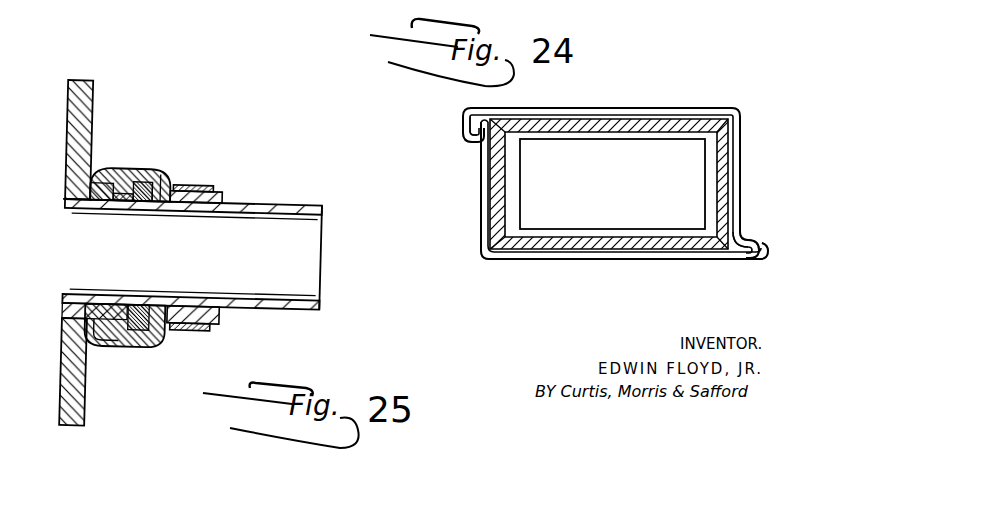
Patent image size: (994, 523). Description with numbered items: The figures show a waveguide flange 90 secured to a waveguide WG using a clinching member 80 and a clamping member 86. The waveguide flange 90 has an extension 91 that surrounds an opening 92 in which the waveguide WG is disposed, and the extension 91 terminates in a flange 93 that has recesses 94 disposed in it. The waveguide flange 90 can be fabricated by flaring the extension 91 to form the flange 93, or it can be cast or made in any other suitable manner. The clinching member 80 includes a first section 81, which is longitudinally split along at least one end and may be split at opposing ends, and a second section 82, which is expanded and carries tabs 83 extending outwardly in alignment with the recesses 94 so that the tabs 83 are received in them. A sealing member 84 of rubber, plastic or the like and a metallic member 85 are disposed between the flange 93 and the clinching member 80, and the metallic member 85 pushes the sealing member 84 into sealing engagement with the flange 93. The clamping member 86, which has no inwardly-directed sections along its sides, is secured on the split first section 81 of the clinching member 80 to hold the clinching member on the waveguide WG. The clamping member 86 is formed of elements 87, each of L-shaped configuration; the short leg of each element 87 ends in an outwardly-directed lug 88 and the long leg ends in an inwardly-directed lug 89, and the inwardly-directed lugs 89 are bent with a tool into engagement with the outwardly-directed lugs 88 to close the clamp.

In FIG. 25, the clinching member 80 is at (166, 335).
In FIG. 24, the first section 81 is at (680, 124).
In FIG. 25, the first section 81 is at (213, 314).
In FIG. 25, the second section 82 is at (119, 170).
In FIG. 25, the tabs 83 is at (95, 342).
In FIG. 25, the sealing member 84 is at (138, 188).
In FIG. 25, the metallic member 85 is at (168, 184).
In FIG. 24, the clamping member 86 is at (628, 108).
In FIG. 25, the clamping member 86 is at (208, 182).
In FIG. 24, the elements 87 is at (582, 111).
In FIG. 24, the outwardly-directed lug 88 is at (470, 141).
In FIG. 24, the inwardly-directed lug 89 is at (462, 126).
In FIG. 25, the waveguide flange 90 is at (70, 128).
In FIG. 25, the extension 91 is at (100, 190).
In FIG. 25, the opening 92 is at (68, 204).
In FIG. 25, the flange 93 is at (134, 178).
In FIG. 25, the recesses 94 is at (125, 342).
In FIG. 24, the waveguide WG is at (638, 140).
In FIG. 25, the waveguide WG is at (294, 205).